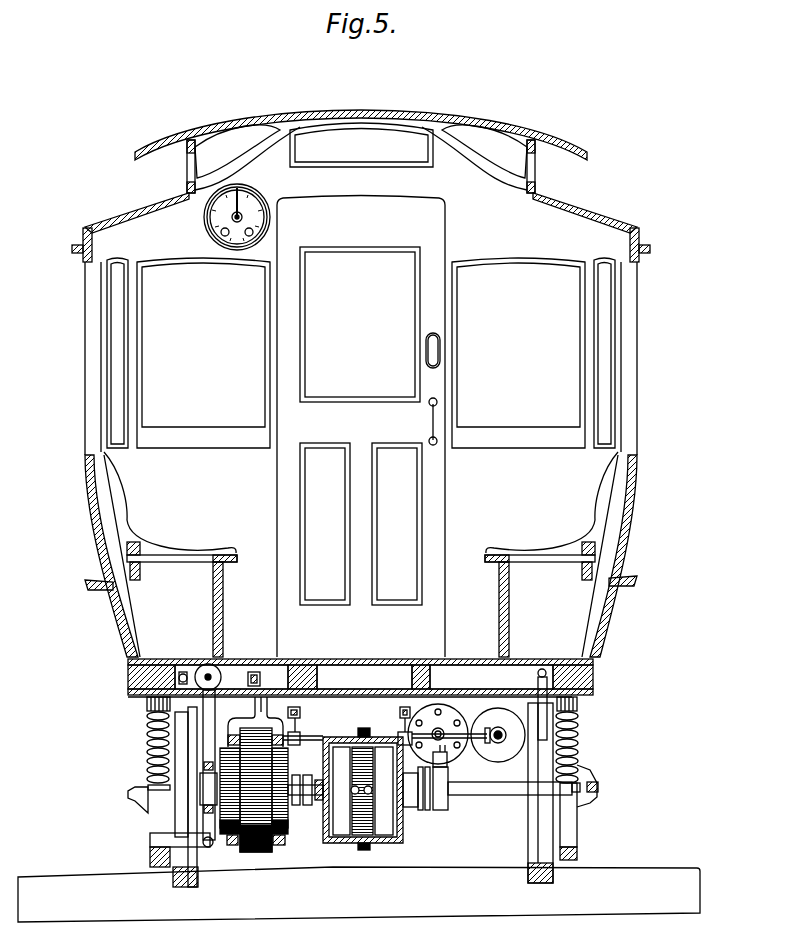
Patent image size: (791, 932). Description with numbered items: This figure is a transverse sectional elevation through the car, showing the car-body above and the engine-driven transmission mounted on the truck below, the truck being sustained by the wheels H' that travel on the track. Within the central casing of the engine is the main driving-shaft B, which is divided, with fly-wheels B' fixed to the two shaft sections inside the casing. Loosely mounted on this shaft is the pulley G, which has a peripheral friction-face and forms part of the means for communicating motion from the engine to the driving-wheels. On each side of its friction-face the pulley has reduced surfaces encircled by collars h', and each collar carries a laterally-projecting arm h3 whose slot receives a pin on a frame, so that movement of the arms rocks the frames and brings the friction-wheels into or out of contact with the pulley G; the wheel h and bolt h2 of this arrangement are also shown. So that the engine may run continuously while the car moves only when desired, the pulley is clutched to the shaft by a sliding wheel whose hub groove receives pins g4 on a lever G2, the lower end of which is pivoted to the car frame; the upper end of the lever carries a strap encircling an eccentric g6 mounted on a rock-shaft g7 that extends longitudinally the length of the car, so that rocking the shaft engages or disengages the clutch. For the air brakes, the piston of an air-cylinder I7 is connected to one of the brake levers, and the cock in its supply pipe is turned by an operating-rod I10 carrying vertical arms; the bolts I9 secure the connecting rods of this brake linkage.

The rock-shaft g7 is at (183, 672).
The eccentric g6 is at (222, 668).
The bracket bolt h2 is at (259, 702).
The laterally-projecting arm h3 is at (248, 720).
The rod bolts I9 is at (300, 712).
The operating-rod I10 is at (457, 726).
The air-cylinder I7 is at (470, 748).
The main driving-shaft B is at (434, 791).
The fly-wheel B' is at (384, 791).
The lever G2 is at (210, 735).
The pin g4 is at (210, 793).
The gear flanges h is at (265, 811).
The collar h' is at (264, 851).
The pulley G is at (262, 852).
The wheel H' is at (344, 807).